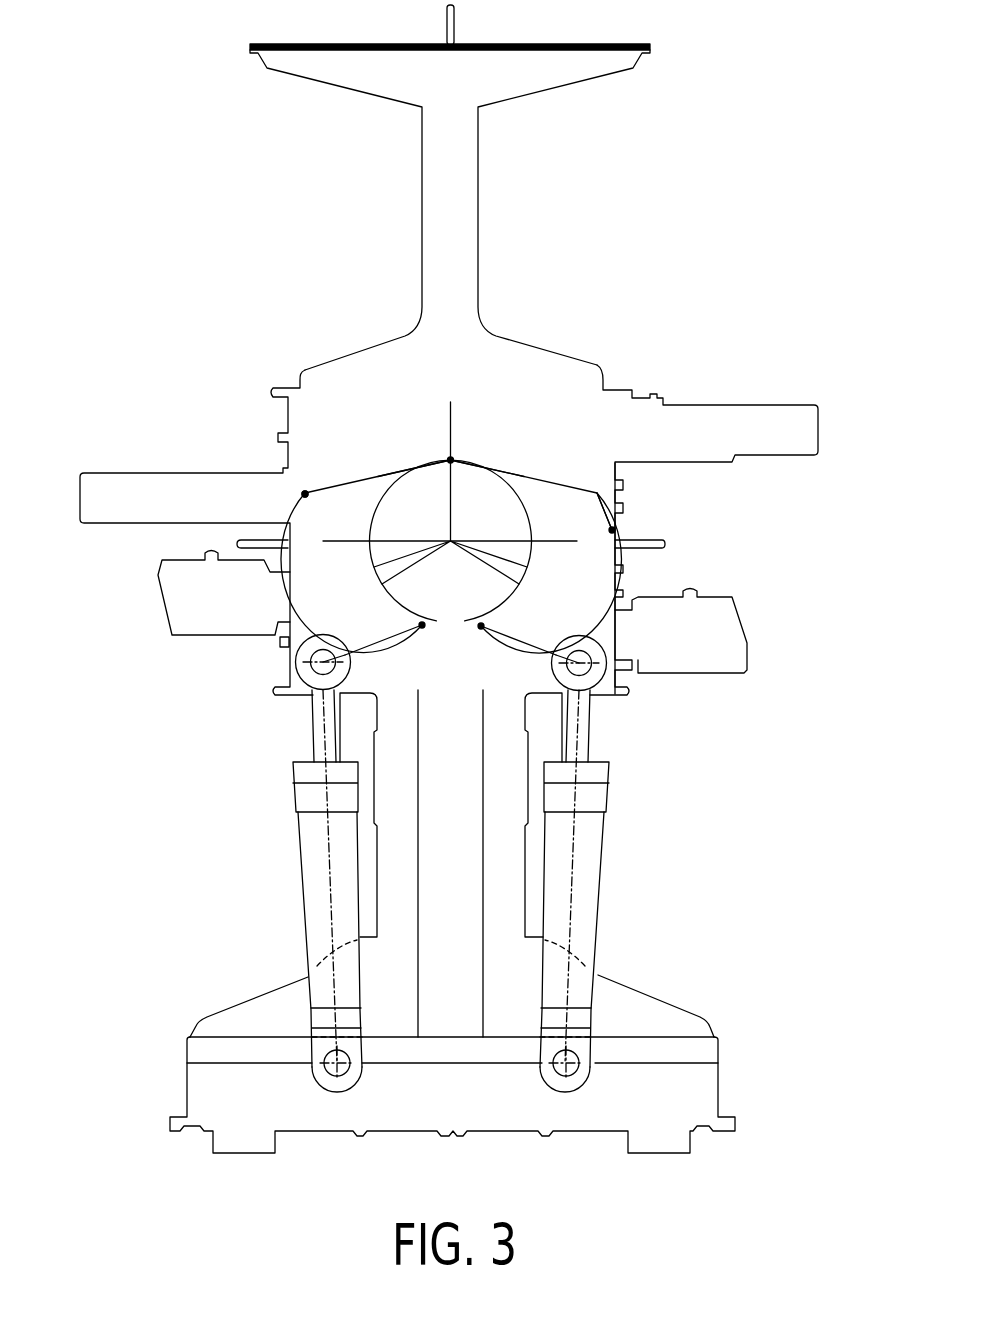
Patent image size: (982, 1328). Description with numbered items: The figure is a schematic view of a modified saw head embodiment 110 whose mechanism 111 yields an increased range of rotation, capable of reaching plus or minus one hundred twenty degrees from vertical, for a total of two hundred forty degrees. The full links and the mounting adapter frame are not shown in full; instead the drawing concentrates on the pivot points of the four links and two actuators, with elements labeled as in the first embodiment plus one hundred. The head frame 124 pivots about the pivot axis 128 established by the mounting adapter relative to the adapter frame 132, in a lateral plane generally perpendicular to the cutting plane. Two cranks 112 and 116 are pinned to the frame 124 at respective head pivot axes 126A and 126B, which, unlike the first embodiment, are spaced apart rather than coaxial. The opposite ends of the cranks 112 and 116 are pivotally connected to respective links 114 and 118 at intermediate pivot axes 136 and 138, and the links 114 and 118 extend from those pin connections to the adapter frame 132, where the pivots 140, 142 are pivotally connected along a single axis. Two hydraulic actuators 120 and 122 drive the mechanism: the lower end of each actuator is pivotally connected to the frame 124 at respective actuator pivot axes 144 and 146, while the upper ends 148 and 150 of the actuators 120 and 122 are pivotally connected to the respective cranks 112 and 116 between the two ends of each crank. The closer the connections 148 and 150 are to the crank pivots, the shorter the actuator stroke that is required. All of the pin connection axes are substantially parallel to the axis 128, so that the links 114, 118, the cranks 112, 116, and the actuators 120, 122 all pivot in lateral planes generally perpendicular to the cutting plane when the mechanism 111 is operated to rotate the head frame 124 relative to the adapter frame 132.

The embodiment 110 is at (661, 252).
The mechanism 111 is at (616, 525).
The crank 112 is at (597, 605).
The link 114 is at (524, 478).
The crank 116 is at (310, 606).
The link 118 is at (373, 477).
The hydraulic actuator 120 is at (604, 940).
The hydraulic actuator 122 is at (302, 942).
The frame 124 is at (421, 243).
The head pivot axis 126A is at (481, 629).
The head pivot axis 126B is at (422, 628).
The pivot axis 128 is at (450, 541).
The adapter frame 132 is at (376, 506).
The intermediate pivot axis 136 is at (574, 500).
The intermediate pivot axis 138 is at (306, 492).
The adapter pivot axis 140 is at (452, 459).
The adapter pivot axis 142 is at (452, 459).
The actuator pivot axis 144 is at (568, 1070).
The actuator pivot axis 146 is at (342, 1072).
The upper end of actuator 148 is at (579, 663).
The upper end of actuator 150 is at (323, 662).